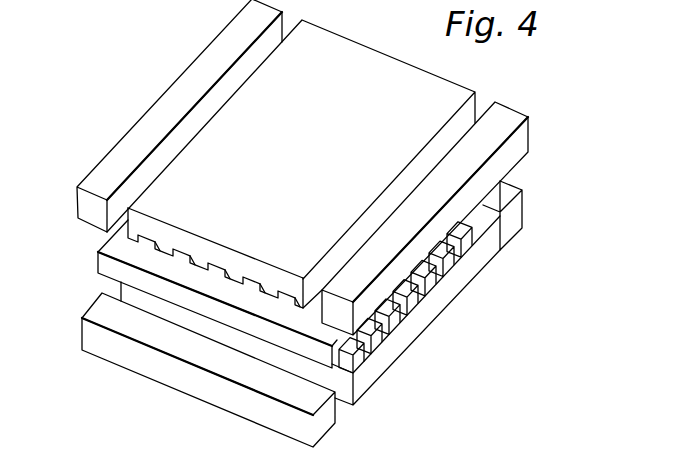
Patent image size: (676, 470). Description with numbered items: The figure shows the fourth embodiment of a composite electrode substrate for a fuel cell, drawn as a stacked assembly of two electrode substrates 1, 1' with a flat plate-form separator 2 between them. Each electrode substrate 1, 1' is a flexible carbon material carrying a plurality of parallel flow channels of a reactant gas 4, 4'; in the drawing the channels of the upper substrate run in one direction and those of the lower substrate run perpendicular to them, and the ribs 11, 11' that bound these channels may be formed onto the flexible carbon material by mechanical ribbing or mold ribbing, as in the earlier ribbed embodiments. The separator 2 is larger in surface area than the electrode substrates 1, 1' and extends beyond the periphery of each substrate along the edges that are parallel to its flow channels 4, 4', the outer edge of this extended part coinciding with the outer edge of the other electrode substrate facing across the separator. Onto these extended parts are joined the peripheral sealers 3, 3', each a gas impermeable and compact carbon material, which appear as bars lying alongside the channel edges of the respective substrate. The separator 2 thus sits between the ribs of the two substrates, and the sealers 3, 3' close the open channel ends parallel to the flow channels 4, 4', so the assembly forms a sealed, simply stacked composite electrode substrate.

The electrode substrate 1 is at (291, 161).
The electrode substrate 1' is at (321, 293).
The separator 2 is at (107, 265).
The peripheral sealer 3 is at (316, 167).
The peripheral sealer 3' is at (327, 326).
The flow channels of a reactant gas 4 is at (227, 268).
The flow channels of a reactant gas 4' is at (409, 297).
The rib 11 is at (97, 243).
The rib 11' is at (485, 283).